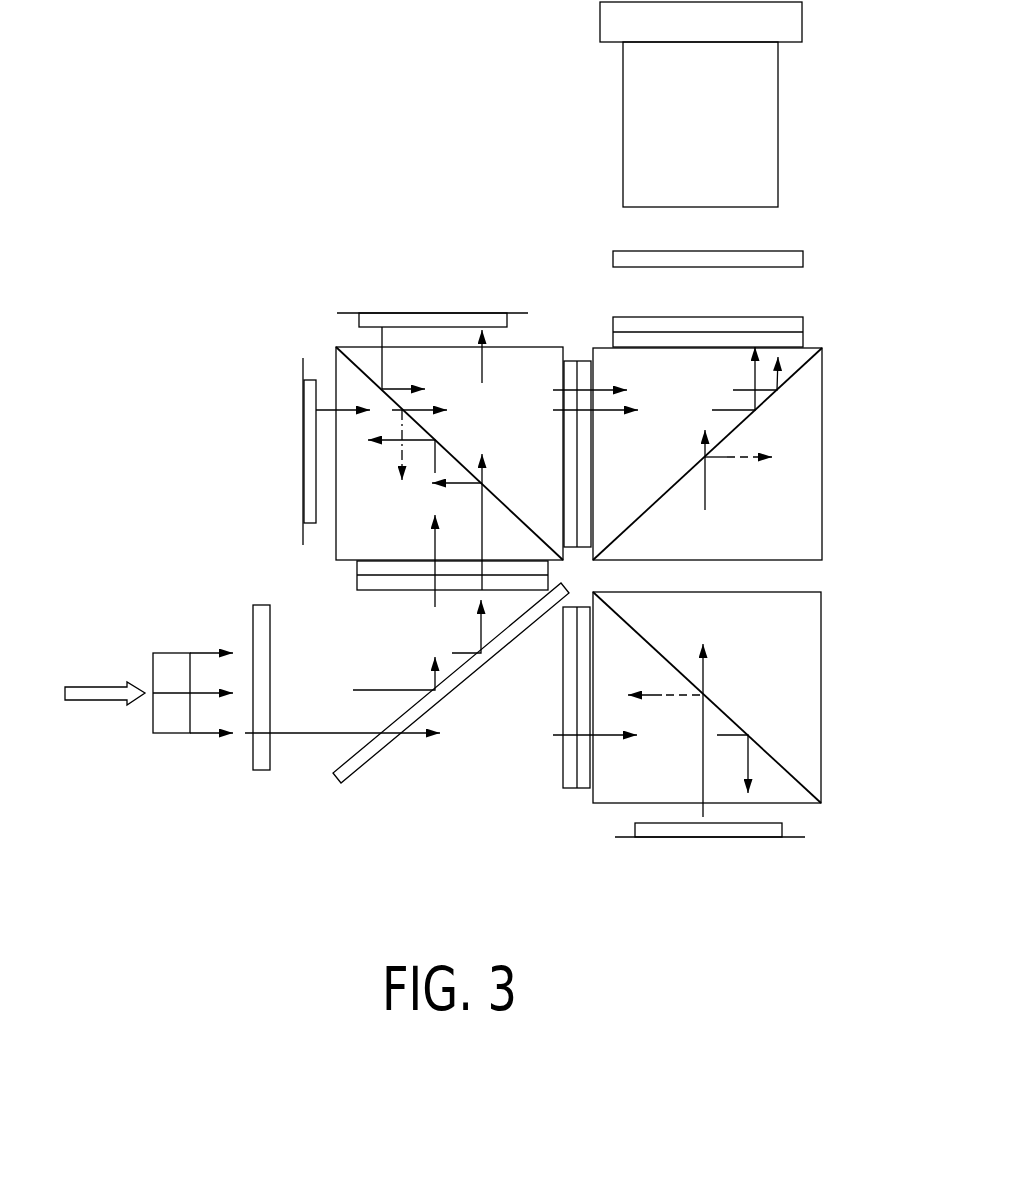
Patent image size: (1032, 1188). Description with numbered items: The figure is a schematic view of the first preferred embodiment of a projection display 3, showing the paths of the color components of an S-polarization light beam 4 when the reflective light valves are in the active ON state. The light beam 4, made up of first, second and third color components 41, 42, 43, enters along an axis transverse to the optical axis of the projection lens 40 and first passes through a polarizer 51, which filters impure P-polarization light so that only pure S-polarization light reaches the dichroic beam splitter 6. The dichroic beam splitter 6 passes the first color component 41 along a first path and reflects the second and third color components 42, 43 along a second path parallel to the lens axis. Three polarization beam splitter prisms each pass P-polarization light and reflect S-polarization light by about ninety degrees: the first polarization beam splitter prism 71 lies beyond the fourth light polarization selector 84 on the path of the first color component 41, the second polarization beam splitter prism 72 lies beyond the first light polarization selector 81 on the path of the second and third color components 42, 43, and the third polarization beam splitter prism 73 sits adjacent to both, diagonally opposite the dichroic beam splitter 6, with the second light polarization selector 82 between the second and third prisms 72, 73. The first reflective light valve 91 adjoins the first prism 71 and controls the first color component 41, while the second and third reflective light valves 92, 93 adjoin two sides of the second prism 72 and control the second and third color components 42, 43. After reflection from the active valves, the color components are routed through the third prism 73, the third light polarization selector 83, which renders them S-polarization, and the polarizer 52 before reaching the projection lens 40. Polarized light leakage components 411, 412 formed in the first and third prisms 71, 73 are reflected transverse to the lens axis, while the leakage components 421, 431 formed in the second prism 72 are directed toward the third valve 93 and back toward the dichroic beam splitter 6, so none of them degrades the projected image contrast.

The projection display 3 is at (824, 303).
The light beam 4 is at (115, 702).
The dichroic beam splitter 6 is at (428, 713).
The projection lens 40 is at (767, 125).
The first color component 41 is at (185, 733).
The second color component 42 is at (165, 650).
The third color component 43 is at (175, 692).
The polarizer 51 is at (263, 768).
The polarizer 52 is at (800, 248).
The first polarization beam splitter prism 71 is at (805, 690).
The second polarization beam splitter prism 72 is at (535, 372).
The third polarization beam splitter prism 73 is at (810, 493).
The first light polarization selector 81 is at (385, 583).
The second light polarization selector 82 is at (583, 372).
The third light polarization selector 83 is at (797, 330).
The fourth light polarization selector 84 is at (567, 780).
The first reflective light valve 91 is at (692, 830).
The second reflective light valve 92 is at (433, 320).
The third reflective light valve 93 is at (312, 438).
The first polarized light leakage component 411 is at (657, 695).
The second polarized light leakage component 412 is at (740, 453).
The third polarized light leakage component 421 is at (457, 487).
The fourth polarized light leakage component 431 is at (398, 455).